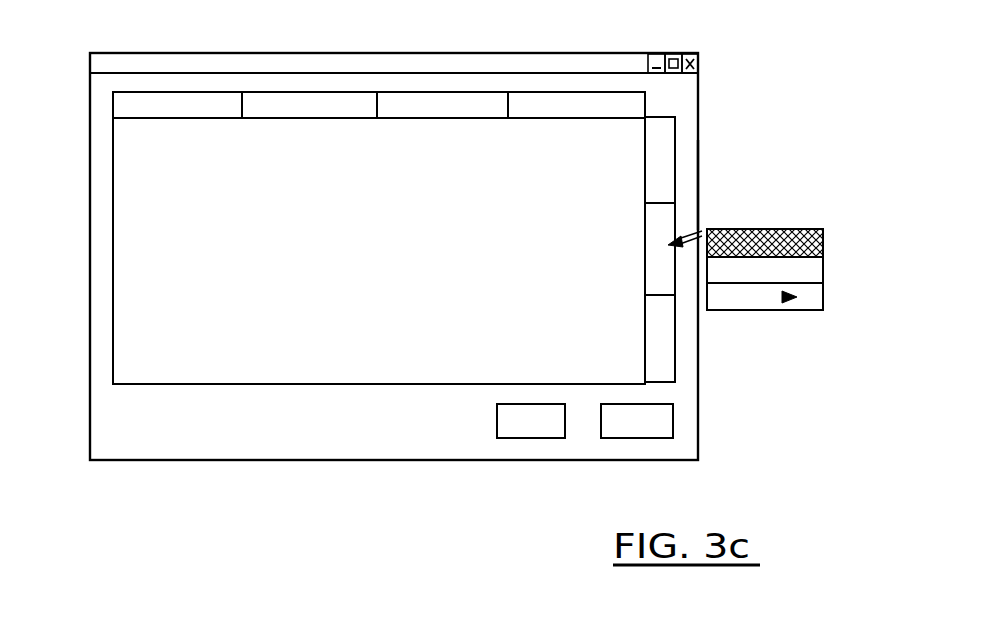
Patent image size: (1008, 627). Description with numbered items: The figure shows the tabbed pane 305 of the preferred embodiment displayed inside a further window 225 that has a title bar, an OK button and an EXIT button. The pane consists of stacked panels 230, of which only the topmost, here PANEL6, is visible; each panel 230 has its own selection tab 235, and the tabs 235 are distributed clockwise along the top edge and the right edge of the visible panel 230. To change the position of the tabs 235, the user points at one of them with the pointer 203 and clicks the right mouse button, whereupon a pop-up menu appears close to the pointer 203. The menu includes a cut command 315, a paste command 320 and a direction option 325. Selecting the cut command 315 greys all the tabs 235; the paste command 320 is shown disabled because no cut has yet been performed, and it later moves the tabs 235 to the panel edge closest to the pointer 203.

The panel 230 is at (143, 272).
The tabbed pane 305 is at (200, 390).
The selection tab 235 is at (645, 227).
The further window 225 is at (700, 186).
The pointer 203 is at (702, 232).
The cut command 315 is at (823, 245).
The paste command 320 is at (823, 268).
The direction option 325 is at (823, 296).